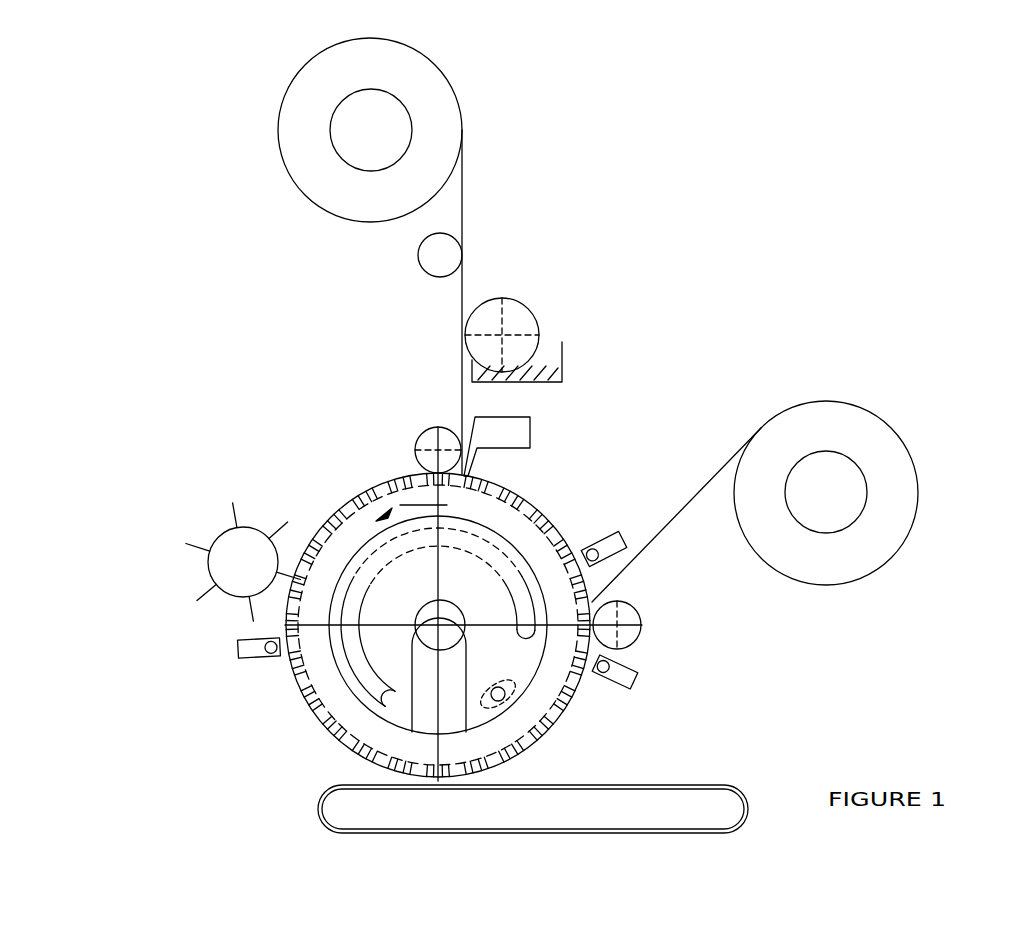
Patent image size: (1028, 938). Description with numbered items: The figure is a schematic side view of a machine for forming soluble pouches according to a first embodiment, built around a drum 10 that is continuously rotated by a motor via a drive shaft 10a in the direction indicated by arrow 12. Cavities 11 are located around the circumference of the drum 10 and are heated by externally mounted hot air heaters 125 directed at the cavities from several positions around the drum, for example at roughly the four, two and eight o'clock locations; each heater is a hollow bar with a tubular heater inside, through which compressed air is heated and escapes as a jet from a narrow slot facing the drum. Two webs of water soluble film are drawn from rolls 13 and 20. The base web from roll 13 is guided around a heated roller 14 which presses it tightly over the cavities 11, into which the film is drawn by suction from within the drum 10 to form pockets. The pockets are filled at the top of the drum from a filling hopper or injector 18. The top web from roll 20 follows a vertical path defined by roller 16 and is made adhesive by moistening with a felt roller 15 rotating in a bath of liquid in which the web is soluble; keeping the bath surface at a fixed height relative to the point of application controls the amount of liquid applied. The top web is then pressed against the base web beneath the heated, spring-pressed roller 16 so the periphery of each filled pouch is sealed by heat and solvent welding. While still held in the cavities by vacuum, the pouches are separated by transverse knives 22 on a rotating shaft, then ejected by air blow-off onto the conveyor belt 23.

The drum 10 is at (537, 713).
The drive shaft 10a is at (463, 634).
The cavities 11 is at (520, 494).
The arrow 12 is at (400, 503).
The roll 13 is at (912, 452).
The heated roller 14 is at (642, 632).
The felt roller 15 is at (533, 310).
The roller 16 is at (422, 433).
The filling hopper or injector 18 is at (530, 430).
The roll 20 is at (302, 185).
The transverse cutting knives 22 is at (212, 537).
The conveyor belt 23 is at (317, 806).
The hot air heaters 125 is at (625, 533).